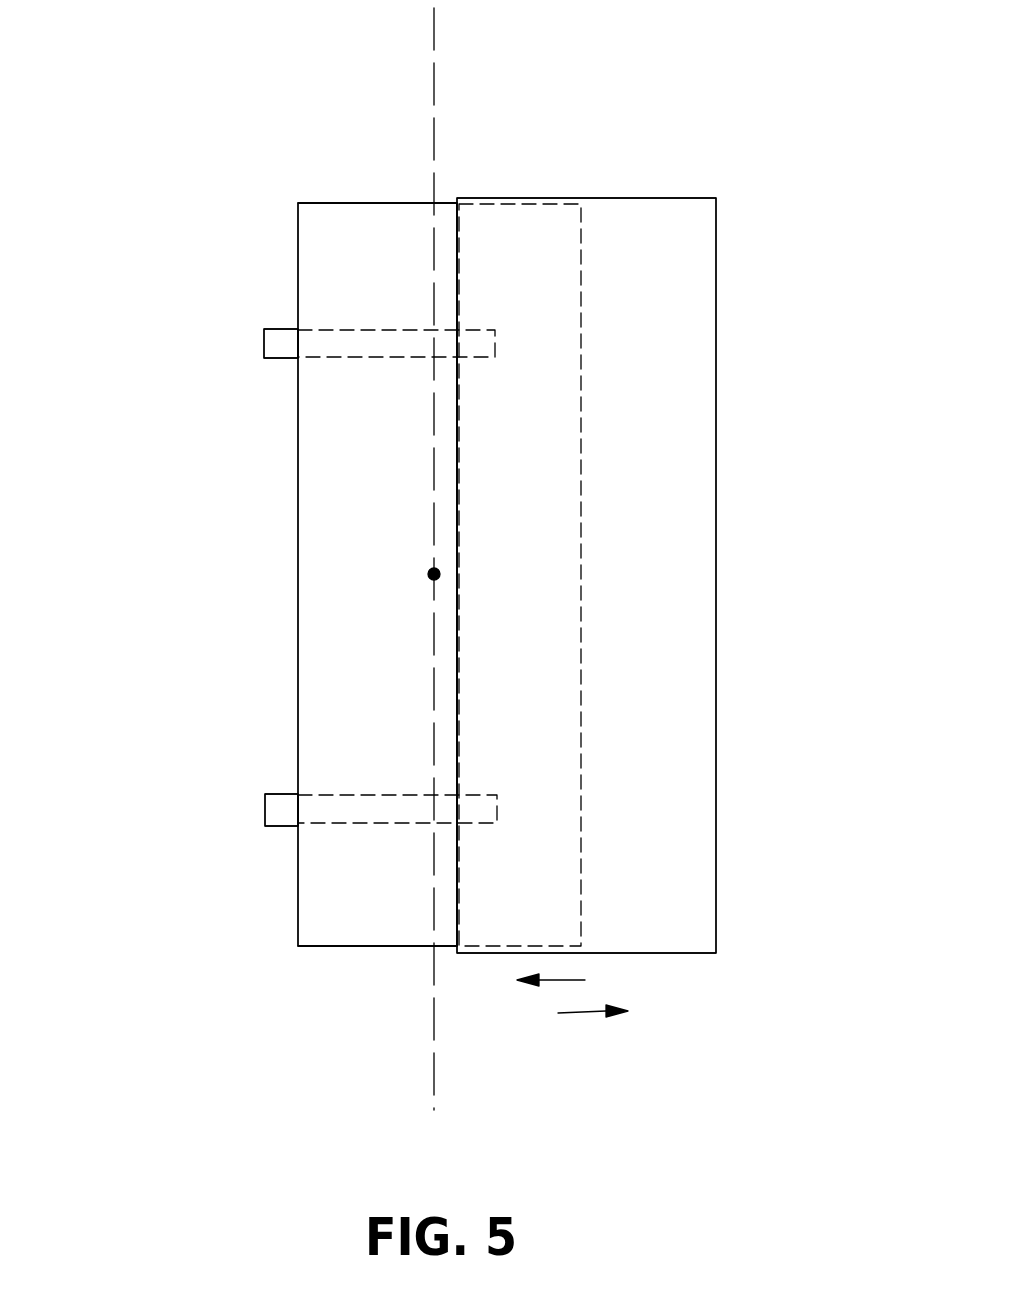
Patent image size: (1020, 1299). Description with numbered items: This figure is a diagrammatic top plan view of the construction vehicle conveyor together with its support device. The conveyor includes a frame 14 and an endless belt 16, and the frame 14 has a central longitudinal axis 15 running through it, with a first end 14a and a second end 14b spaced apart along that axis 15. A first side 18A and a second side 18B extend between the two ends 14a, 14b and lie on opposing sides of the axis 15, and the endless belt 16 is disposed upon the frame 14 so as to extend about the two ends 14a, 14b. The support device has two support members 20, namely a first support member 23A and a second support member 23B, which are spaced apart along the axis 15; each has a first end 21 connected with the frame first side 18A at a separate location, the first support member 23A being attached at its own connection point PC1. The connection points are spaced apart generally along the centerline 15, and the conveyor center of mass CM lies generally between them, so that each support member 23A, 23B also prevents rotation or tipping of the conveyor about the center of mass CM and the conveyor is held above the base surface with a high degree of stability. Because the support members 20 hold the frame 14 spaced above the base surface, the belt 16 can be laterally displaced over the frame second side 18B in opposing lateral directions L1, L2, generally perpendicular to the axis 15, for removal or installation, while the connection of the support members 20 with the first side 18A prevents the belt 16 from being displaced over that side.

The frame 14 is at (184, 508).
The first end 14a is at (373, 203).
The second end 14b is at (365, 948).
The central longitudinal axis 15 is at (434, 43).
The endless belt 16 is at (702, 328).
The first side 18A is at (298, 593).
The second side 18B is at (582, 548).
The support member 20 is at (214, 338).
The first end 21 is at (277, 340).
The first support member 23A is at (247, 365).
The second support member 23B is at (250, 777).
The center of mass CM is at (440, 574).
The connection point PC1 is at (360, 873).
The first lateral direction L1 is at (576, 1016).
The second lateral direction L2 is at (569, 971).